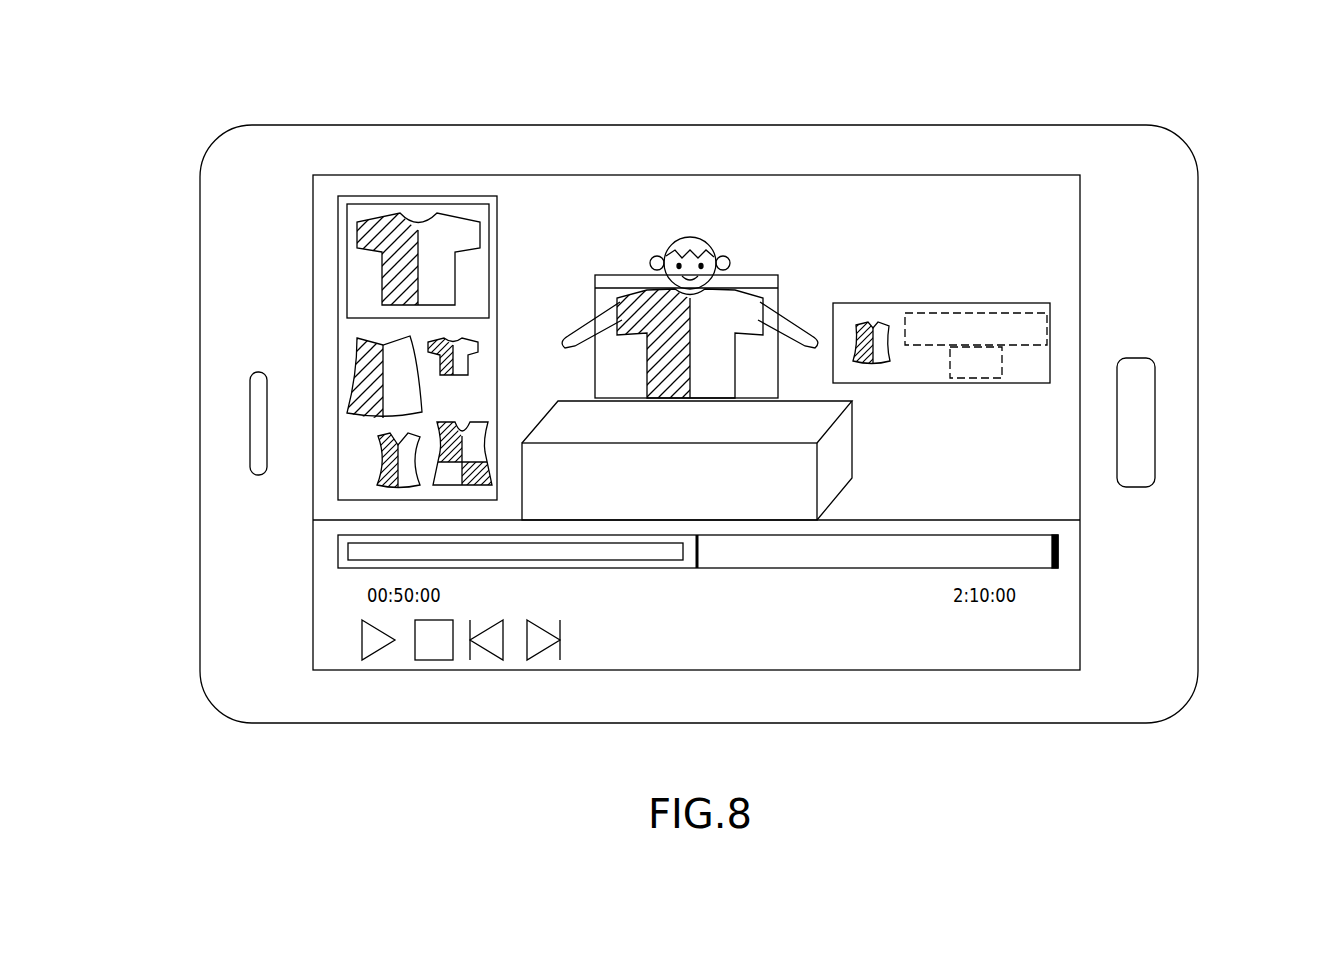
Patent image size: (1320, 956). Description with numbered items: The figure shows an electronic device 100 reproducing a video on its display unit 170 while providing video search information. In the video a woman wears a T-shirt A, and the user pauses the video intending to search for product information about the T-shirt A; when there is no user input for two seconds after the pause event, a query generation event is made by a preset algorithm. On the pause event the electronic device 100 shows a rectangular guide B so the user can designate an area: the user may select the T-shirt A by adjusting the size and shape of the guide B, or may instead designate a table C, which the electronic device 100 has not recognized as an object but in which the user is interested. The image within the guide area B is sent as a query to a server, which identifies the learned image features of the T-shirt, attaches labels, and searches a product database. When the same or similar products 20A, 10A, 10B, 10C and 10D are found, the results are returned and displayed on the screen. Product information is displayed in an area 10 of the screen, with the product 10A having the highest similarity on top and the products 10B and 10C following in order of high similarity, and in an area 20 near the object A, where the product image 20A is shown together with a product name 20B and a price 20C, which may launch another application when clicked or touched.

The area of the screen 10 is at (416, 195).
The product 10A is at (348, 272).
The product 10B is at (358, 355).
The product 10C is at (470, 338).
The product 10D is at (487, 422).
The area near the object 20 is at (943, 302).
The product image 20A is at (883, 313).
The product name 20B is at (1030, 312).
The price 20C is at (973, 380).
The electronic device 100 is at (1020, 124).
The display unit 170 is at (1079, 215).
The T-shirt A is at (605, 275).
The guide B is at (779, 292).
The table C is at (838, 455).